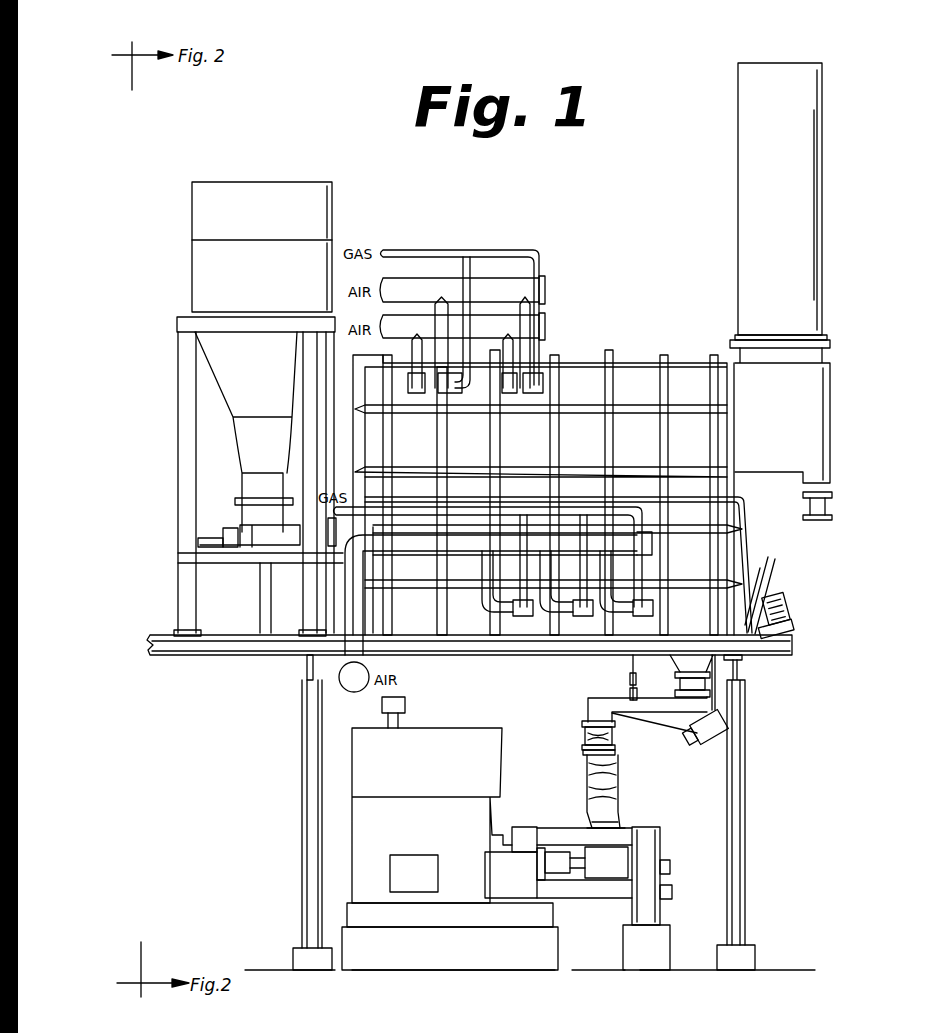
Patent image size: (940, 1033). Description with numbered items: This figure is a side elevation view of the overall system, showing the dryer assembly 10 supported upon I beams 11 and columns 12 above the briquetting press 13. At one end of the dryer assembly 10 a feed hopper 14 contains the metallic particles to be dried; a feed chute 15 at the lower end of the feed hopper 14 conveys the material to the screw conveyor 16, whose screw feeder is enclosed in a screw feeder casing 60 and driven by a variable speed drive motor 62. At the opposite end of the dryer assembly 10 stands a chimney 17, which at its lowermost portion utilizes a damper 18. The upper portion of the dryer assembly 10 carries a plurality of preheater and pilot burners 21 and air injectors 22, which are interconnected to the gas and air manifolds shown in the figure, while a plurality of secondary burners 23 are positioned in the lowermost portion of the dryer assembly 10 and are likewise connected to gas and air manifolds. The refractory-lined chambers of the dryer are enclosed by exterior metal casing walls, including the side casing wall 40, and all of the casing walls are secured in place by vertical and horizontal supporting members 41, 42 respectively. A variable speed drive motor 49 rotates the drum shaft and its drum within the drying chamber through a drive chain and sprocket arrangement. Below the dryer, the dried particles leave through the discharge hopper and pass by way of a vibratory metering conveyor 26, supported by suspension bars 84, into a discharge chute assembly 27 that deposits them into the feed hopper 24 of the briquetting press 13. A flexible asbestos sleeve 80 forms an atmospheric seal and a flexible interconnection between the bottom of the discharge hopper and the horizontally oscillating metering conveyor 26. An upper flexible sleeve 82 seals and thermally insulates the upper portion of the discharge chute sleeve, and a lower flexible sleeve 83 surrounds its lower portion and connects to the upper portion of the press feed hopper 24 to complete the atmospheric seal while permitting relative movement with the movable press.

The dryer assembly 10 is at (643, 352).
The I beams 11 is at (770, 648).
The columns 12 is at (735, 893).
The briquetting press 13 is at (368, 762).
The feed hopper 14 is at (210, 212).
The feed chute 15 is at (250, 490).
The screw conveyor 16 is at (253, 530).
The chimney 17 is at (797, 262).
The damper 18 is at (818, 510).
The preheater and pilot burners 21 is at (550, 365).
The air injectors 22 is at (425, 387).
The secondary burners 23 is at (585, 615).
The feed hopper 24 is at (620, 826).
The metering conveyor 26 is at (617, 728).
The discharge chute assembly 27 is at (617, 770).
The side casing wall 40 is at (690, 452).
The vertical supporting members 41 is at (637, 392).
The horizontal supporting members 42 is at (585, 407).
The variable speed drive motor 49 is at (790, 605).
The screw feeder casing 60 is at (245, 545).
The variable speed drive motor 62 is at (213, 543).
The asbestos sleeve 80 is at (700, 682).
The upper flexible sleeve 82 is at (673, 720).
The lower flexible sleeve 83 is at (617, 820).
The suspension bars 84 is at (715, 710).